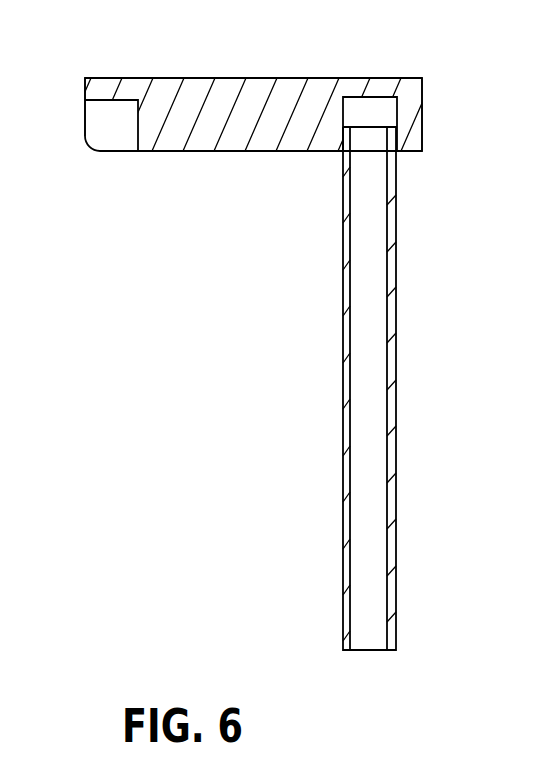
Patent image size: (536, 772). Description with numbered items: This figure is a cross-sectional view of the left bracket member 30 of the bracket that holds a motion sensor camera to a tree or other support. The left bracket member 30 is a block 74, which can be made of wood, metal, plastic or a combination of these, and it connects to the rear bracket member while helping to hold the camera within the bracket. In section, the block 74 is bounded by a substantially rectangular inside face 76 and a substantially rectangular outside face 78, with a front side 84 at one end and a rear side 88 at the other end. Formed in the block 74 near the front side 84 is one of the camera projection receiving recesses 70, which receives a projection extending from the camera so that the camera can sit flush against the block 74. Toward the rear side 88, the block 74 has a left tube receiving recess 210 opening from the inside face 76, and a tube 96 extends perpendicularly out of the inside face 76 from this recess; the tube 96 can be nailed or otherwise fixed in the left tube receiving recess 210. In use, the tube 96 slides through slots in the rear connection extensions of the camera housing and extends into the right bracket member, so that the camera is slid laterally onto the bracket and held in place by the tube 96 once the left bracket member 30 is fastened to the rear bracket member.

The left bracket member 30 is at (319, 74).
The camera projection receiving recess 70 is at (115, 125).
The block 74 is at (200, 72).
The inside face 76 is at (237, 153).
The outside face 78 is at (235, 77).
The front side 84 is at (85, 92).
The rear side 88 is at (421, 104).
The tube 96 is at (342, 380).
The left tube receiving recess 210 is at (373, 108).